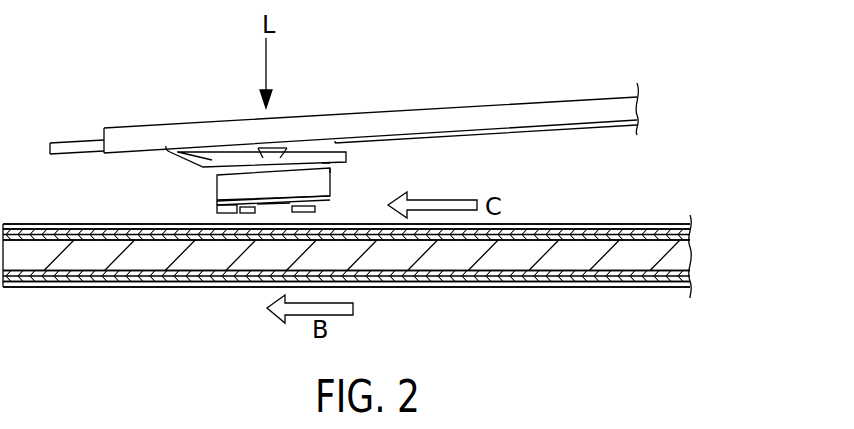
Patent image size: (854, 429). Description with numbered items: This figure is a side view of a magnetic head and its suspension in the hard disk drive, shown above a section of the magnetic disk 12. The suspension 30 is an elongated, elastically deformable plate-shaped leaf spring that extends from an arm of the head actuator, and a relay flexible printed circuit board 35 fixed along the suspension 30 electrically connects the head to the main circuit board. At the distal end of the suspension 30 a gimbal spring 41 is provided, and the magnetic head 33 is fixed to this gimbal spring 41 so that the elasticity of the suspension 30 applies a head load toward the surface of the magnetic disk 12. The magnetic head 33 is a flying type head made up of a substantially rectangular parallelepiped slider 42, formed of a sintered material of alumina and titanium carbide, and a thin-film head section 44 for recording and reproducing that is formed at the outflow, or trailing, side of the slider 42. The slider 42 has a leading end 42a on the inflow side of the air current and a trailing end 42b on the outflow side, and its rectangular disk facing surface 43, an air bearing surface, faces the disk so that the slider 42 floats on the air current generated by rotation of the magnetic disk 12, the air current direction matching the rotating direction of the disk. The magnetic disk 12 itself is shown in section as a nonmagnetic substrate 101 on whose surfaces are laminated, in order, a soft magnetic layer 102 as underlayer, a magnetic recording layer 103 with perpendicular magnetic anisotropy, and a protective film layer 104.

The magnetic disk 12 is at (384, 244).
The suspension 30 is at (519, 112).
The magnetic head 33 is at (346, 187).
The relay flexible printed circuit board 35 is at (585, 131).
The gimbal spring 41 is at (335, 158).
The slider 42 is at (248, 180).
The leading end 42a is at (335, 183).
The trailing end 42b is at (217, 206).
The disk facing surface 43 is at (267, 222).
The head section 44 is at (217, 187).
The substrate 101 is at (597, 262).
The soft magnetic layer 102 is at (690, 240).
The magnetic recording layer 103 is at (618, 225).
The protective film layer 104 is at (685, 222).